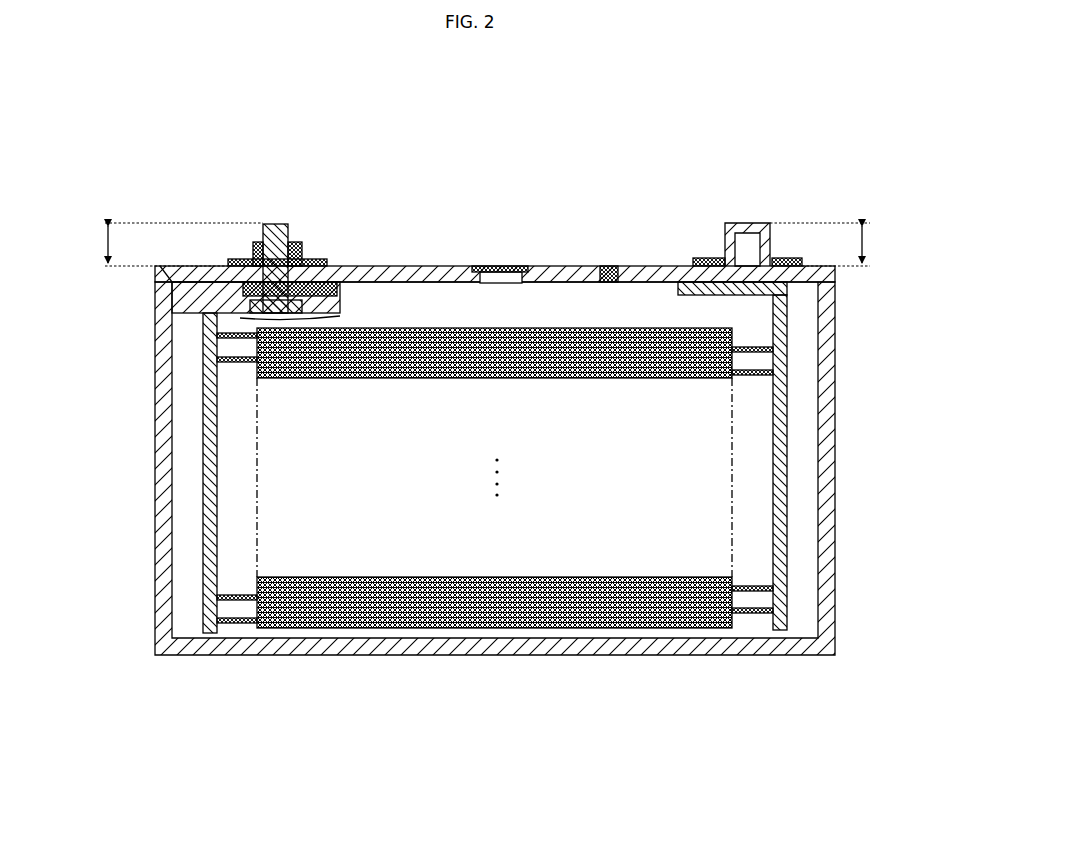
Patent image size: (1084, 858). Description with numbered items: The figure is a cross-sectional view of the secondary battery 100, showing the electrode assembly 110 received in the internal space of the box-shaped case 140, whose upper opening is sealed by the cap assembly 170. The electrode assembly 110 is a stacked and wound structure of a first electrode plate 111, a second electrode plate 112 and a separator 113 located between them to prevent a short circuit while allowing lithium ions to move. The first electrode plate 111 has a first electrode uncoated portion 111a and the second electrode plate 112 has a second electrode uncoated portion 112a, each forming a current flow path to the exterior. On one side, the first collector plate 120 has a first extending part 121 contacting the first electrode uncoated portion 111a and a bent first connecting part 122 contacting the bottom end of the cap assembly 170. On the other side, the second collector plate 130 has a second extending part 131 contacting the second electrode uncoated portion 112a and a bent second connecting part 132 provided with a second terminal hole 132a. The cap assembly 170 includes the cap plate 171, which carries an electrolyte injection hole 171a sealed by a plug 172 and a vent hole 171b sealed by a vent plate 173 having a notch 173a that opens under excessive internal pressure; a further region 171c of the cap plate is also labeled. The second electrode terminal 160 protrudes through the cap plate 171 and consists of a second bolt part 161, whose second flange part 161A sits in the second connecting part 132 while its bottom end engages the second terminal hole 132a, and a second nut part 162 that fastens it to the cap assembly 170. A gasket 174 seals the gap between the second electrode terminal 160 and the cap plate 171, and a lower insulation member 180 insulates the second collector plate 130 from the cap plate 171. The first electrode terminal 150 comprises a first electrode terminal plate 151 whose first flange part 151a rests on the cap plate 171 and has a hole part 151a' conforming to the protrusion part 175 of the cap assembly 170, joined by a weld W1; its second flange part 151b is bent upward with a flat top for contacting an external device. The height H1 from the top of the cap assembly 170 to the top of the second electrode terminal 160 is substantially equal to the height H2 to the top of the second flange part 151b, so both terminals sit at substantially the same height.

The secondary battery 100 is at (858, 130).
The electrode assembly 110 is at (585, 645).
The first electrode plate 111 is at (652, 632).
The first electrode uncoated portion 111a is at (750, 625).
The second electrode plate 112 is at (370, 632).
The second electrode uncoated portion 112a is at (240, 630).
The separator 113 is at (512, 630).
The first collector plate 120 is at (786, 456).
The first extending part 121 is at (780, 500).
The first connecting part 122 is at (730, 290).
The second collector plate 130 is at (200, 457).
The second extending part 131 is at (210, 500).
The second connecting part 132 is at (172, 297).
The second terminal hole 132a is at (240, 318).
The case 140 is at (835, 400).
The first electrode terminal 150 is at (778, 238).
The first electrode terminal plate 151 is at (788, 246).
The first flange part 151a is at (777, 227).
The hole part 151a' is at (815, 222).
The second flange part 151b is at (738, 224).
The second electrode terminal 160 is at (295, 241).
The second bolt part 161 is at (316, 250).
The second flange part 161A is at (318, 300).
The second nut part 162 is at (298, 250).
The cap assembly 170 is at (495, 267).
The cap plate 171 is at (563, 268).
The electrolyte injection hole 171a is at (605, 283).
The vent hole 171b is at (488, 283).
The cap plate terminal region 171c is at (408, 284).
The plug 172 is at (609, 268).
The vent plate 173 is at (514, 268).
The notch 173a is at (486, 268).
The gasket 174 is at (248, 262).
The protrusion part 175 is at (710, 262).
The lower insulation member 180 is at (190, 268).
The height H1 is at (170, 244).
The height H2 is at (834, 244).
The weld W1 is at (795, 265).